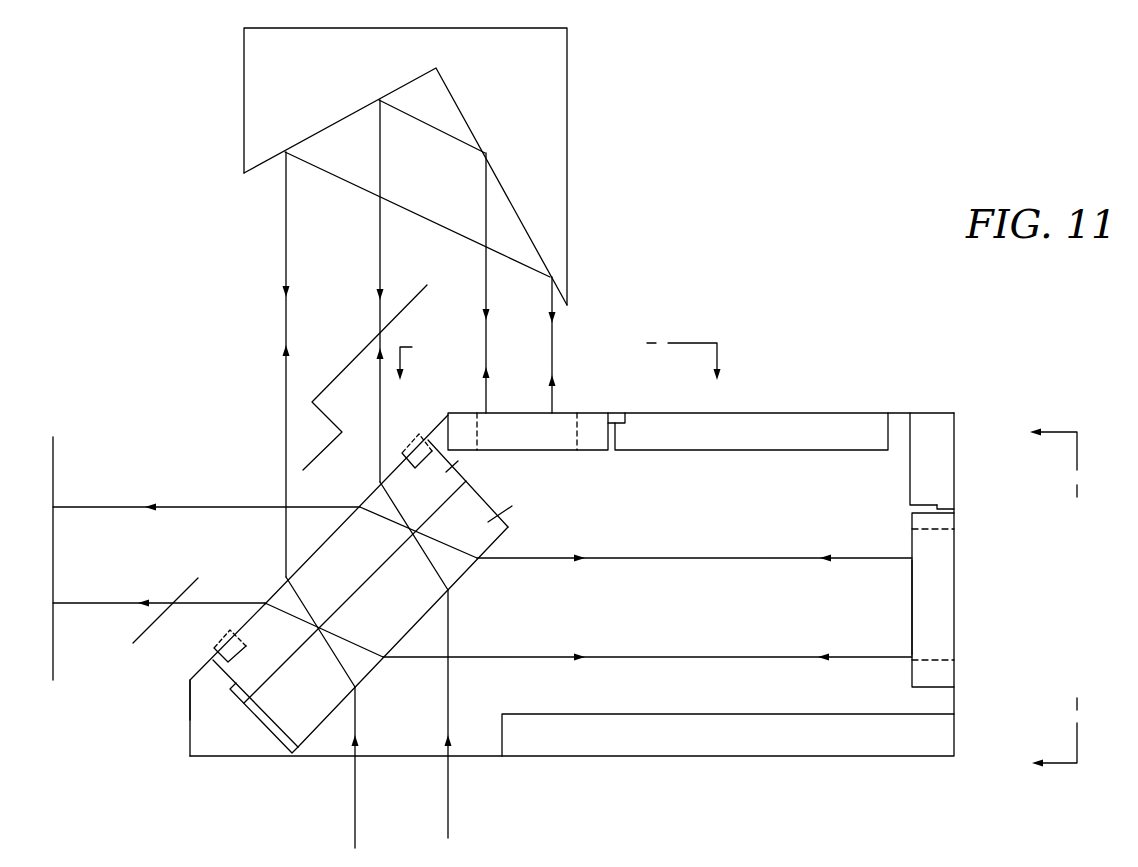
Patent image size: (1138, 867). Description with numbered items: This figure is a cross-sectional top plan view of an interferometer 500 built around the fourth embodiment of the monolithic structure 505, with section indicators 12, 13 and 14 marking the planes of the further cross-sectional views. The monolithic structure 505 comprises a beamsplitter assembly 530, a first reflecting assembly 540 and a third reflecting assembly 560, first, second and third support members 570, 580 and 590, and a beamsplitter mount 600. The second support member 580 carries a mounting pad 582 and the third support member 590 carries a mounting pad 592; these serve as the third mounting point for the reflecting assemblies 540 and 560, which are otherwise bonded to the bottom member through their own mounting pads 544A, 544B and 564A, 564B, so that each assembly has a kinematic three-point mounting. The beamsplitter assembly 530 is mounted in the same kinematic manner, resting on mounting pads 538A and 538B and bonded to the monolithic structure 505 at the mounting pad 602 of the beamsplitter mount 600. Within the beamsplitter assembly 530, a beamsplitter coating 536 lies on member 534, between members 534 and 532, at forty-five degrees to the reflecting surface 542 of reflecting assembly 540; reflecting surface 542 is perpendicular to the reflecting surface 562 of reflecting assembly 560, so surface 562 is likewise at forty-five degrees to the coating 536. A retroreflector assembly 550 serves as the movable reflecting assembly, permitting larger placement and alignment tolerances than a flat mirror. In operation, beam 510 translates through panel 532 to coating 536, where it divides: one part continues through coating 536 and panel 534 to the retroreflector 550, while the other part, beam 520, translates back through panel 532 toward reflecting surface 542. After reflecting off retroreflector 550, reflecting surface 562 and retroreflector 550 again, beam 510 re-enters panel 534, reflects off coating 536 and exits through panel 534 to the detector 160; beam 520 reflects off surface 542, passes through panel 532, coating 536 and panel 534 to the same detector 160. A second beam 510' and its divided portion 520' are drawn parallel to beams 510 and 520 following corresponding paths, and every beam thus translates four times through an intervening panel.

The interferometer 500 is at (772, 182).
The monolithic structure 505 is at (951, 770).
The beam 510 is at (417, 469).
The second light beam 510' is at (377, 500).
The beam 520 is at (482, 510).
The second redirected light beam 520' is at (482, 609).
The beamsplitter assembly 530 is at (489, 493).
The panel 532 is at (490, 525).
The panel 534 is at (452, 470).
The beamsplitter coating 536 is at (278, 675).
The mounting pad 538A is at (230, 634).
The mounting pad 538B is at (422, 442).
The first reflecting assembly 540 is at (957, 620).
The reflecting surface 542 is at (898, 612).
The mounting pad 544A is at (942, 520).
The mounting pad 544B is at (943, 678).
The retroreflector assembly 550 is at (570, 101).
The third reflecting assembly 560 is at (572, 404).
The reflecting surface 562 is at (514, 404).
The mounting pad 564A is at (459, 427).
The mounting pad 564B is at (597, 412).
The first support member 570 is at (817, 743).
The second support member 580 is at (940, 427).
The mounting pad 582 is at (943, 505).
The third support member 590 is at (720, 422).
The mounting pad 592 is at (623, 414).
The beamsplitter mount 600 is at (212, 740).
The mounting pad 602 is at (210, 678).
The detector 160 is at (53, 450).
The section line for FIG. 12 is at (427, 285).
The section line for FIG. 13 is at (579, 348).
The section line for FIG. 14 is at (1058, 601).